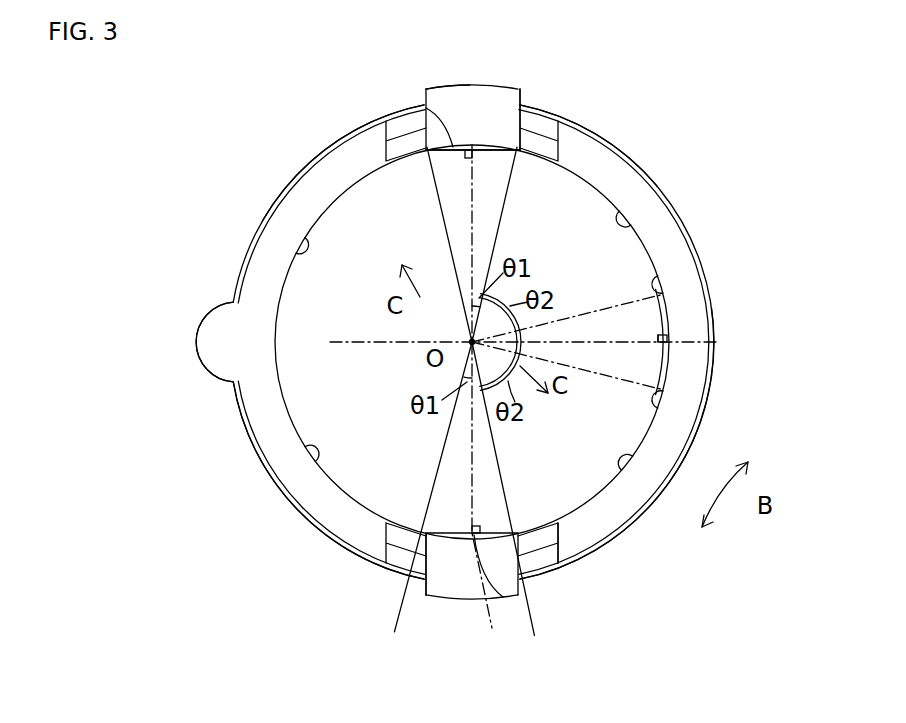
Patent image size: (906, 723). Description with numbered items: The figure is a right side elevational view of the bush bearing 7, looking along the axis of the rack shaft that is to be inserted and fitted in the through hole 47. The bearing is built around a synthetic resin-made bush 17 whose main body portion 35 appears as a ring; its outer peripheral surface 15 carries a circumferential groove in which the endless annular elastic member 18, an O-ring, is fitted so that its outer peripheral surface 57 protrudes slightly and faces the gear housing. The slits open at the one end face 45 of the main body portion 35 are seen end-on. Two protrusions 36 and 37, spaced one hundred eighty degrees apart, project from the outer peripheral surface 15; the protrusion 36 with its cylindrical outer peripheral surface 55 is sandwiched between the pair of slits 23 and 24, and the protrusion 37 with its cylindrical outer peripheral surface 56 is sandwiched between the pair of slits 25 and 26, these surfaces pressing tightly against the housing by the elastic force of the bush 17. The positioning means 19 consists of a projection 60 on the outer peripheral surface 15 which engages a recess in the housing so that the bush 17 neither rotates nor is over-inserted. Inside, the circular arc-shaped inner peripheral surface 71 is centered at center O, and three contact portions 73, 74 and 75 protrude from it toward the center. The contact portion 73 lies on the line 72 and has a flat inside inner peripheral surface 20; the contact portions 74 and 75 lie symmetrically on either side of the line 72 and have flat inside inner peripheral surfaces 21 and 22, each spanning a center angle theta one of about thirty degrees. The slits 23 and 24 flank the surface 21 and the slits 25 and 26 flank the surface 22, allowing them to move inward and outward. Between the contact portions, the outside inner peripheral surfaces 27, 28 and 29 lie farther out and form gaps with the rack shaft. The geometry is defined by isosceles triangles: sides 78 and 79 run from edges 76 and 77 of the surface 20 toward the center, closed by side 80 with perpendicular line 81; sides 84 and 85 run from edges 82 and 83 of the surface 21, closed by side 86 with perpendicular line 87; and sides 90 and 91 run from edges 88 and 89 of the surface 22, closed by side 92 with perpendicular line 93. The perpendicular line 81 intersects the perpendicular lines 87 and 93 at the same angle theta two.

The bush bearing 7 is at (270, 516).
The outer peripheral surface 15 is at (715, 292).
The bush 17 is at (628, 470).
The endless annular elastic member 18 is at (258, 455).
The positioning means 19 is at (212, 384).
The inside inner peripheral surface 20 is at (713, 325).
The inside inner peripheral surface 21 is at (503, 148).
The inside inner peripheral surface 22 is at (437, 594).
The slit 23 is at (538, 122).
The slit 24 is at (396, 118).
The slit 25 is at (532, 555).
The slit 26 is at (387, 565).
The outside inner peripheral surface 27 is at (637, 227).
The outside inner peripheral surface 28 is at (628, 530).
The outside inner peripheral surface 29 is at (302, 260).
The main body portion 35 is at (628, 183).
The protrusion 36 is at (476, 92).
The protrusion 37 is at (470, 598).
The end face 45 is at (715, 397).
The through hole 47 is at (372, 482).
The outer peripheral surface 55 is at (438, 85).
The outer peripheral surface 56 is at (500, 597).
The outer peripheral surface 57 is at (297, 162).
The projection 60 is at (210, 348).
The inner peripheral surface 71 is at (313, 456).
The line 72 is at (363, 342).
The contact portion 73 is at (668, 340).
The contact portion 74 is at (483, 147).
The contact portion 75 is at (516, 590).
The edge 76 is at (662, 278).
The edge 77 is at (664, 404).
The side 78 is at (642, 300).
The side 79 is at (632, 387).
The side 80 is at (666, 366).
The perpendicular line 81 is at (620, 341).
The edge 82 is at (384, 128).
The edge 83 is at (556, 130).
The side 84 is at (448, 244).
The side 85 is at (496, 244).
The side 86 is at (412, 120).
The perpendicular line 87 is at (472, 202).
The edge 88 is at (560, 565).
The edge 89 is at (399, 594).
The side 90 is at (502, 468).
The side 91 is at (440, 470).
The side 92 is at (490, 400).
The perpendicular line 93 is at (478, 527).